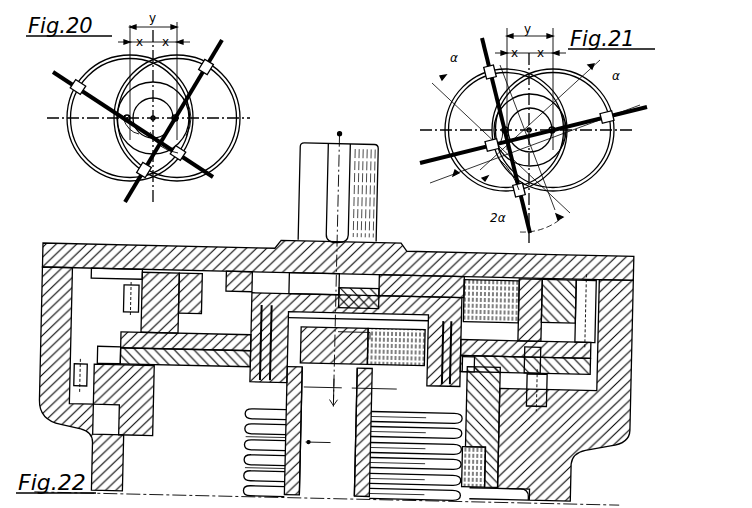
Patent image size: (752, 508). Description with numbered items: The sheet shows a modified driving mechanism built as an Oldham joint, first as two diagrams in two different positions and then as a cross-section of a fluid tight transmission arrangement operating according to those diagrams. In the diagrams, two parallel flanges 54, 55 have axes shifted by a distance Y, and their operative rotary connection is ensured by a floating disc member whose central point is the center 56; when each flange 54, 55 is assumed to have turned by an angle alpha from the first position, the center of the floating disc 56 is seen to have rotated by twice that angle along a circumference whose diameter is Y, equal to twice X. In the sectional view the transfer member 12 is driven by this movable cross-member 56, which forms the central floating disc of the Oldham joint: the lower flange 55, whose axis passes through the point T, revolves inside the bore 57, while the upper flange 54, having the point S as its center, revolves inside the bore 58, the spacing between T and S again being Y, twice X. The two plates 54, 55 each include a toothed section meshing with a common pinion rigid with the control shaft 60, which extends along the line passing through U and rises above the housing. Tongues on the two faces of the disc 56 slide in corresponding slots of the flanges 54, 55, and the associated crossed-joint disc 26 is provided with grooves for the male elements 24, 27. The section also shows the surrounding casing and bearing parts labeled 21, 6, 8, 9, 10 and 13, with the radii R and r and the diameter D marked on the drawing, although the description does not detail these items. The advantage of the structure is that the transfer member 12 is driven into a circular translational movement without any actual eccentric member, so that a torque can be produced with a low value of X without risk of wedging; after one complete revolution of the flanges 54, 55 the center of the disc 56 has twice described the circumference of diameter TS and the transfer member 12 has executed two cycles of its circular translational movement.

In FIG. 22, the spring 6 is at (462, 493).
In FIG. 22, the shaft 8 is at (364, 466).
In FIG. 22, the bore 9 is at (326, 478).
In FIG. 22, the cup member 10 is at (420, 332).
In FIG. 22, the transfer member 12 is at (498, 366).
In FIG. 22, the disc 13 is at (410, 358).
In FIG. 22, the housing cover 21 is at (460, 252).
In FIG. 22, the male element 24 is at (392, 265).
In FIG. 22, the crossed-joint disc 26 is at (263, 270).
In FIG. 22, the male element 27 is at (492, 280).
In FIG. 20, the upper flange 54 is at (228, 88).
In FIG. 21, the upper flange 54 is at (604, 158).
In FIG. 22, the upper flange 54 is at (592, 290).
In FIG. 20, the lower flange 55 is at (73, 140).
In FIG. 21, the lower flange 55 is at (450, 116).
In FIG. 22, the lower flange 55 is at (538, 393).
In FIG. 20, the floating disc 56 is at (178, 158).
In FIG. 21, the floating disc 56 is at (503, 162).
In FIG. 22, the floating disc 56 is at (560, 350).
In FIG. 22, the bore 57 is at (132, 402).
In FIG. 22, the bore 58 is at (178, 266).
In FIG. 22, the control shaft 60 is at (368, 200).
In FIG. 20, the diameter D is at (155, 114).
In FIG. 21, the diameter D is at (531, 126).
In FIG. 22, the diameter D is at (340, 393).
In FIG. 20, the point T is at (122, 134).
In FIG. 21, the point T is at (498, 120).
In FIG. 22, the point T is at (318, 435).
In FIG. 20, the point S is at (194, 130).
In FIG. 21, the point S is at (572, 158).
In FIG. 22, the point S is at (362, 340).
In FIG. 22, the radius R is at (374, 380).
In FIG. 22, the radius r is at (323, 380).